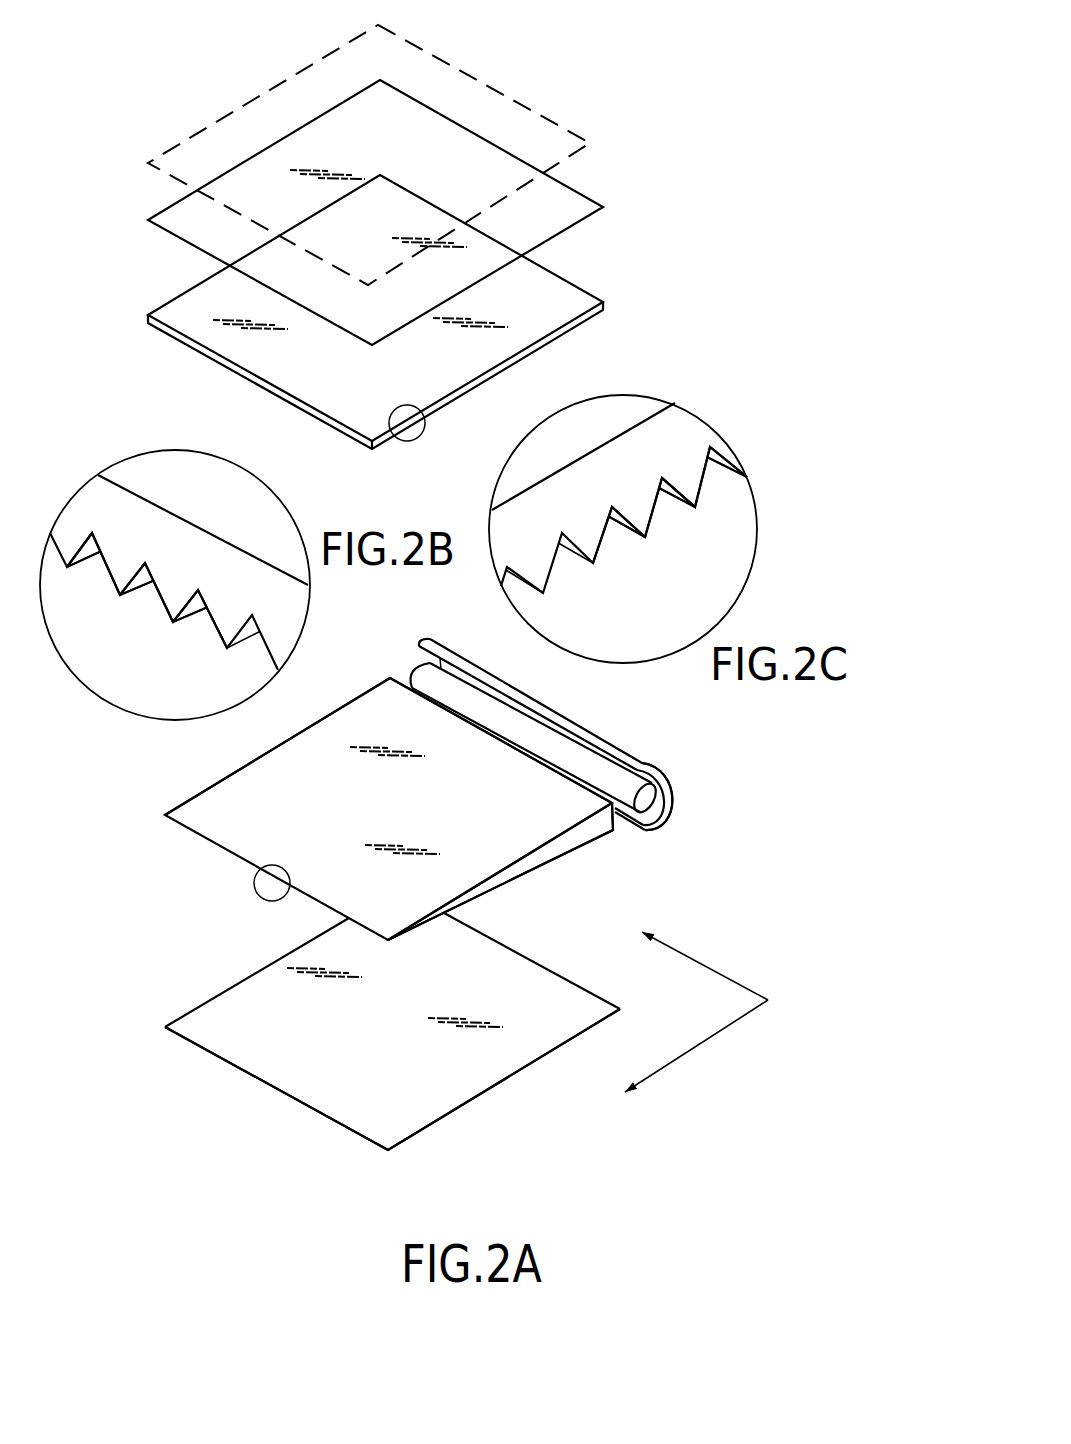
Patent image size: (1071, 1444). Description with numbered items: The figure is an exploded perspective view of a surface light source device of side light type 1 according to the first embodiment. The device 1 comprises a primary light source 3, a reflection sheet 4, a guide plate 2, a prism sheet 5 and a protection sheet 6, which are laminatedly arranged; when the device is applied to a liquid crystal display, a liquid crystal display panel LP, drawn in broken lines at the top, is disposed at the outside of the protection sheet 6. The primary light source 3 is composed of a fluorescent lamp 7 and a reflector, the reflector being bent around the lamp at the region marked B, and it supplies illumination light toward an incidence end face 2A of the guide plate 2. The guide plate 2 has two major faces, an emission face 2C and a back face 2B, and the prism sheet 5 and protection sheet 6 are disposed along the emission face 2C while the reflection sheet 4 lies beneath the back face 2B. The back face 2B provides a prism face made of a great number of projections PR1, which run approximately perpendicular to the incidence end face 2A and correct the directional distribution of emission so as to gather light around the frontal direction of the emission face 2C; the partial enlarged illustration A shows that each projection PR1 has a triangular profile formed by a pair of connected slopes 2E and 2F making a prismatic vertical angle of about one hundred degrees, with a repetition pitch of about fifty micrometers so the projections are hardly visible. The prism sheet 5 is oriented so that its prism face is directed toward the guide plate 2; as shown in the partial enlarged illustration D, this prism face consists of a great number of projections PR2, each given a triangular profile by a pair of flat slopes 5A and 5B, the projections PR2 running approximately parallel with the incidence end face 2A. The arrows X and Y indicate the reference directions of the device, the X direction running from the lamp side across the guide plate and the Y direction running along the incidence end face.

In FIG. 2A, the surface light source device of side light type 1 is at (218, 1092).
In FIG. 2A, the guide plate 2 is at (210, 830).
In FIG. 2A, the incidence end face 2A is at (530, 758).
In FIG. 2A, the back face 2B is at (547, 867).
In FIG. 2A, the emission face 2C is at (348, 702).
In FIG. 2B, the slope 2E is at (90, 550).
In FIG. 2B, the slope 2F is at (217, 628).
In FIG. 2B, the projections PR1 is at (165, 590).
In FIG. 2A, the primary light source 3 is at (668, 786).
In FIG. 2A, the reflection sheet 4 is at (320, 1105).
In FIG. 2A, the prism sheet 5 is at (187, 295).
In FIG. 2C, the slope 5A is at (703, 487).
In FIG. 2C, the slope 5B is at (662, 487).
In FIG. 2C, the projections PR2 is at (592, 543).
In FIG. 2A, the protection sheet 6 is at (170, 215).
In FIG. 2A, the fluorescent lamp 7 is at (640, 798).
In FIG. 2A, the liquid crystal display panel LP is at (590, 143).
In FIG. 2A, the partial enlarged illustration A is at (268, 865).
In FIG. 2A, the bent portion of reflector B is at (638, 767).
In FIG. 2A, the partial enlarged illustration D is at (500, 482).
In FIG. 2A, the X direction X is at (696, 1046).
In FIG. 2A, the Y direction Y is at (705, 966).